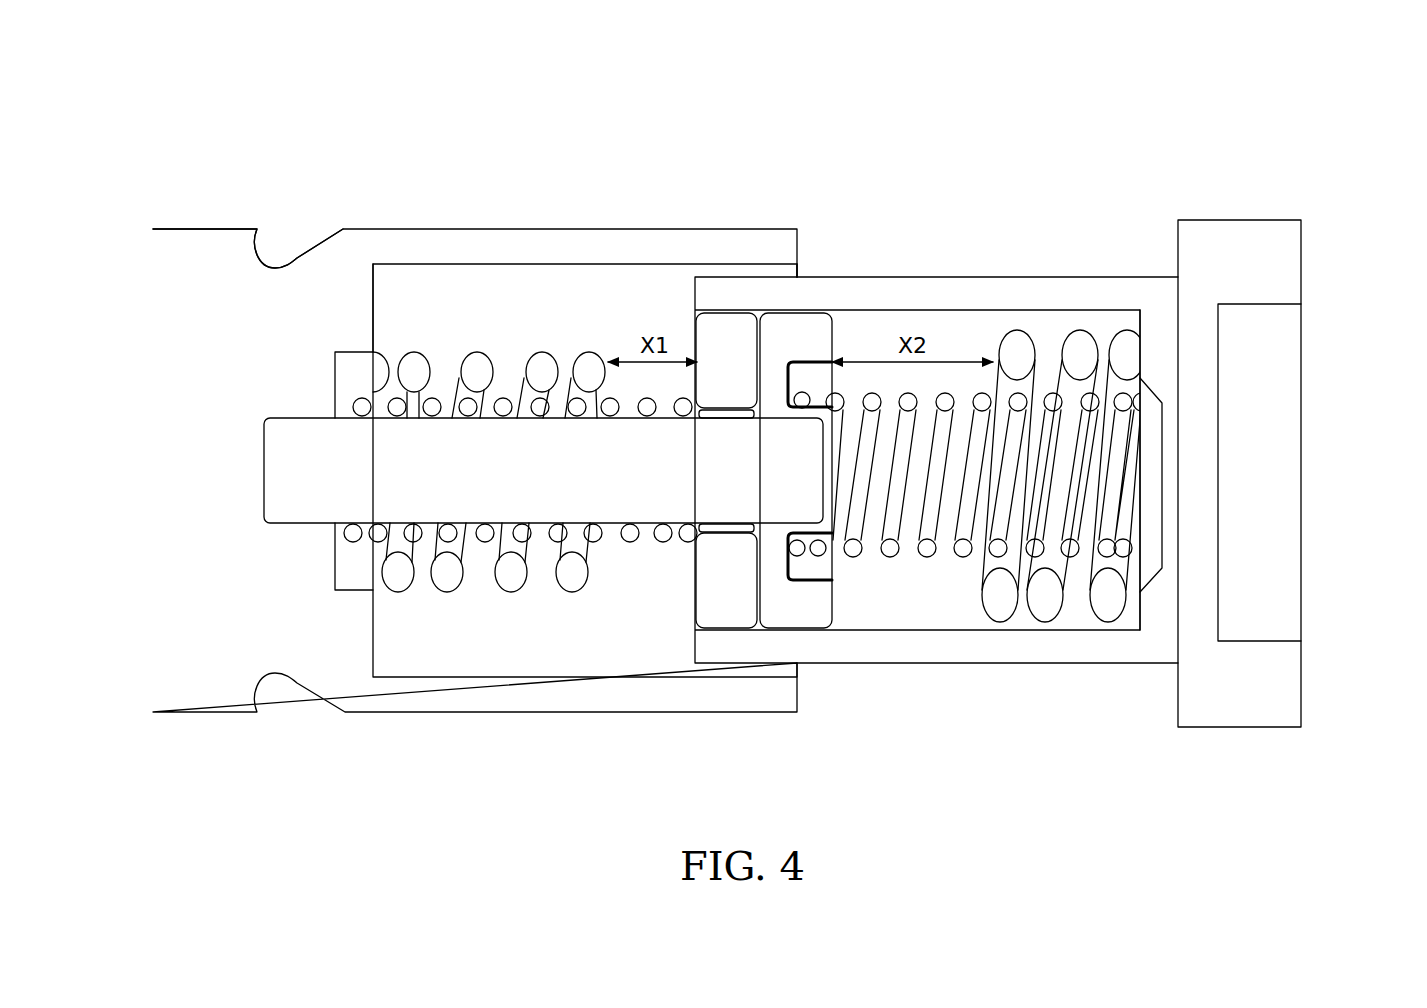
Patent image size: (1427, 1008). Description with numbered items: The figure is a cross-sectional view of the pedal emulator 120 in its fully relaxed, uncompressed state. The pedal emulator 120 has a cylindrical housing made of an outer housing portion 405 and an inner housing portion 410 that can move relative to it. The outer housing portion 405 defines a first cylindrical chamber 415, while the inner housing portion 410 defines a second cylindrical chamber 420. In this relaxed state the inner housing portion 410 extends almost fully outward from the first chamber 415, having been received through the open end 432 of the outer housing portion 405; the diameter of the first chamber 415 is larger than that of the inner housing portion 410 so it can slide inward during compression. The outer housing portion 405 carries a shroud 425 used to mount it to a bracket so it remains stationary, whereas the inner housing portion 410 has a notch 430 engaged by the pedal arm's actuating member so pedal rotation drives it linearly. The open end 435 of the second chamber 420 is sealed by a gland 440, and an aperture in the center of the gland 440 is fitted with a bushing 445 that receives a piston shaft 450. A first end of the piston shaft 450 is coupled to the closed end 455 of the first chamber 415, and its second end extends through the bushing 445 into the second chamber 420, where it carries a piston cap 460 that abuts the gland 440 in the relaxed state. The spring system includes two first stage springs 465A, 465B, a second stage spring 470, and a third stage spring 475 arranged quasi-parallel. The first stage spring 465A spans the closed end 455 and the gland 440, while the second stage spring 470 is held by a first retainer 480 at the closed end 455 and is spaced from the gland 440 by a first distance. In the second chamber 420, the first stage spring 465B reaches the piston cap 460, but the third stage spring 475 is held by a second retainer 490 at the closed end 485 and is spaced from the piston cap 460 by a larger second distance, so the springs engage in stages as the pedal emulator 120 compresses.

The pedal emulator 120 is at (950, 85).
The outer housing portion 405 is at (183, 337).
The inner housing portion 410 is at (1300, 357).
The first cylindrical chamber 415 is at (405, 648).
The second cylindrical chamber 420 is at (875, 613).
The shroud 425 is at (200, 247).
The notch 430 is at (1265, 547).
The open end 432 is at (797, 270).
The open end 435 is at (708, 318).
The gland 440 is at (723, 610).
The bushing 445 is at (725, 527).
The piston shaft 450 is at (393, 488).
The closed end 455 is at (373, 310).
The piston cap 460 is at (798, 325).
The first stage spring 465A is at (627, 530).
The first stage spring 465B is at (927, 553).
The second stage spring 470 is at (475, 372).
The third stage spring 475 is at (1015, 353).
The first retainer 480 is at (343, 562).
The closed end 485 is at (1140, 325).
The second retainer 490 is at (1156, 397).